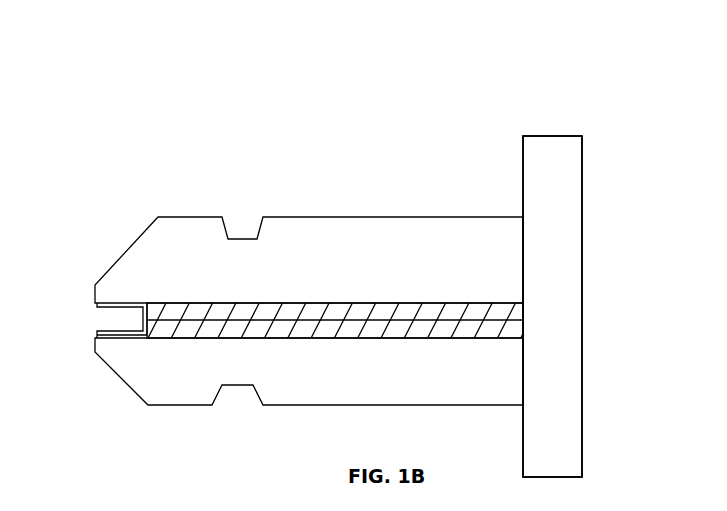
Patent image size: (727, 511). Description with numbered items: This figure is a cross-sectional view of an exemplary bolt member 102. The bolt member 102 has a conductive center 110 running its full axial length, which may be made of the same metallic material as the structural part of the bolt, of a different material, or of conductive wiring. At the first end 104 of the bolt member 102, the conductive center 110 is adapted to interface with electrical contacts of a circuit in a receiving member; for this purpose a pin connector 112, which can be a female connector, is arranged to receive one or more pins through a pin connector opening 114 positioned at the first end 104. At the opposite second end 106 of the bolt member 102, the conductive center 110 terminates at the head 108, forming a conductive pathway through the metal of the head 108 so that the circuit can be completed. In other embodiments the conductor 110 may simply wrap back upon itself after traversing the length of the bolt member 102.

The bolt member 102 is at (595, 82).
The first end 104 is at (98, 238).
The second end 106 is at (548, 125).
The head 108 is at (550, 355).
The conductive center 110 is at (212, 343).
The pin connector 112 is at (135, 300).
The pin connector opening 114 is at (100, 317).